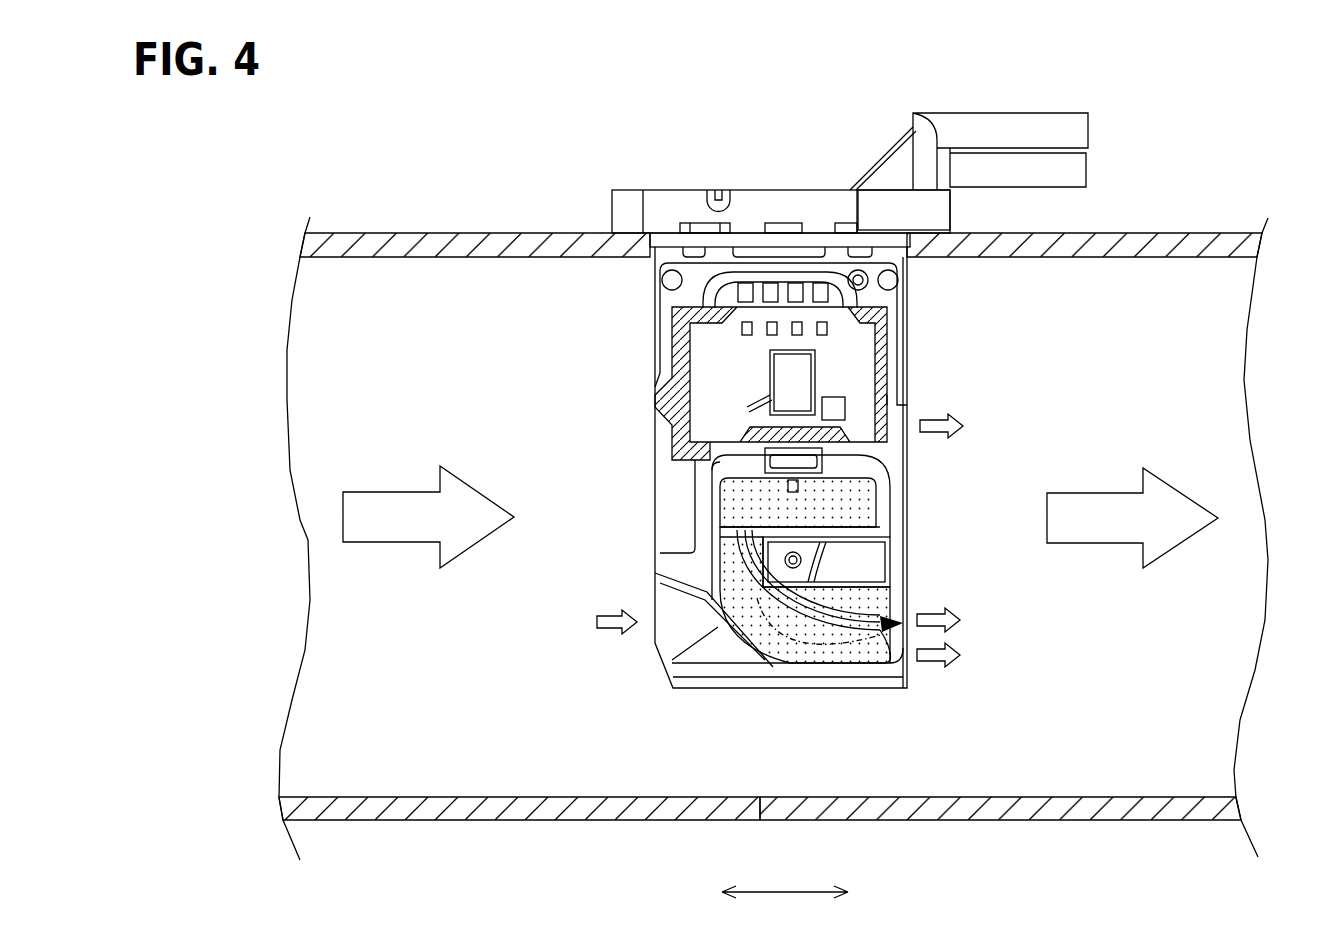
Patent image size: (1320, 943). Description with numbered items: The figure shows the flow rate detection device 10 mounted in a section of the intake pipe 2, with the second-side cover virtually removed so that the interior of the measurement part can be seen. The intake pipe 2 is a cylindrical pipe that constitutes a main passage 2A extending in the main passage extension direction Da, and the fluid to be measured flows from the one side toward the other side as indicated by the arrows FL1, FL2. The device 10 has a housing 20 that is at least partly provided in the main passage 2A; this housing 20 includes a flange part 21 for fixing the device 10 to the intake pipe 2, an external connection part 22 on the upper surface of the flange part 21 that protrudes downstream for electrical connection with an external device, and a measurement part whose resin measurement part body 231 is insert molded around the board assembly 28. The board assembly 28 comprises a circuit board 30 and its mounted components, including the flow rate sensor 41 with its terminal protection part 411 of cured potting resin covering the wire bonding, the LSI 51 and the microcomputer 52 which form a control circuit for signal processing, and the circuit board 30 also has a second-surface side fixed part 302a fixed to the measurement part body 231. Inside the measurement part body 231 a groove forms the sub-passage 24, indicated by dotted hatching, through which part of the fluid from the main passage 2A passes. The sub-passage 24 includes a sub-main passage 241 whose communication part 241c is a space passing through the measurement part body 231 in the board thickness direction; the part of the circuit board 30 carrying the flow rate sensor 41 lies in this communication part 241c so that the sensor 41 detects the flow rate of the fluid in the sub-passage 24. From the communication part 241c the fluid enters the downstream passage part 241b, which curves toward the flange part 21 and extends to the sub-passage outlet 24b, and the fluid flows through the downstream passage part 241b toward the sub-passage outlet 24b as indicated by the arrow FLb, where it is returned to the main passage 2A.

The intake pipe 2 is at (364, 231).
The main passage 2A is at (383, 775).
The flow rate detection device 10 is at (752, 106).
The housing 20 is at (719, 184).
The flange part 21 is at (783, 205).
The external connection part 22 is at (1035, 135).
The measurement part body 231 is at (655, 293).
The second-surface side fixed part 302a is at (880, 318).
The LSI 51 is at (797, 367).
The microcomputer 52 is at (834, 408).
The terminal protection part 411 is at (800, 460).
The flow rate sensor 41 is at (835, 508).
The sub-main passage 241 is at (878, 524).
The board assembly 28 is at (648, 471).
The circuit board 30 is at (672, 497).
The communication part 241c is at (712, 497).
The sub-passage 24 is at (905, 608).
The sub-passage outlet 24b is at (903, 640).
The downstream passage part 241b is at (812, 641).
The arrow FLb is at (763, 637).
The arrow FL1 is at (393, 490).
The arrow FL2 is at (1094, 492).
The main passage extension direction Da is at (783, 893).